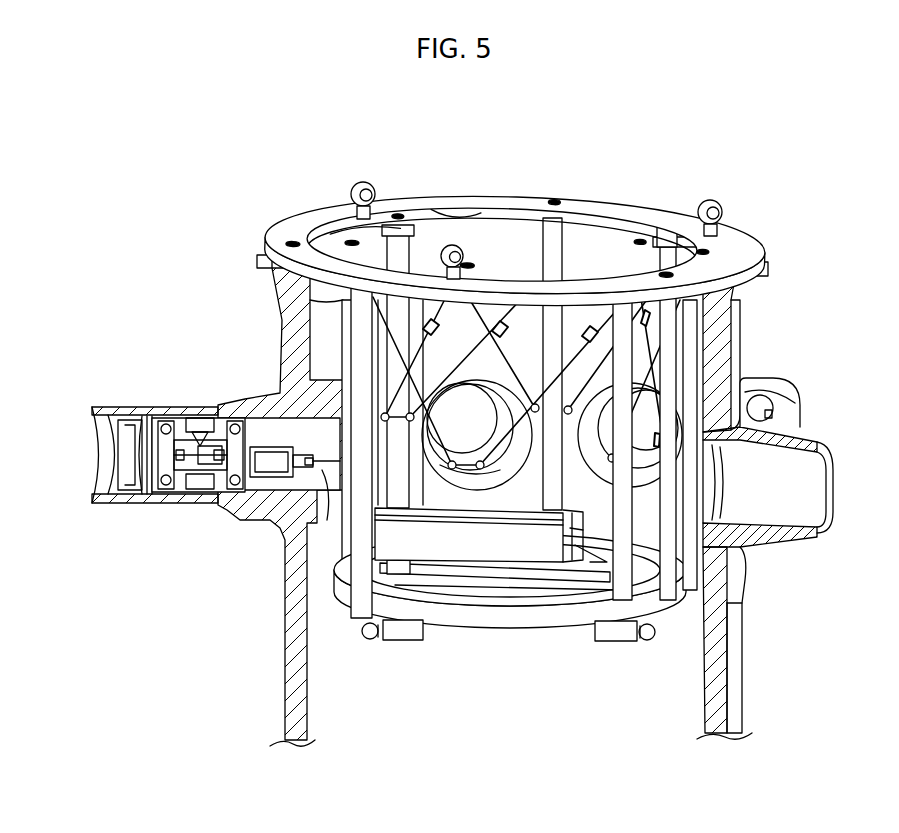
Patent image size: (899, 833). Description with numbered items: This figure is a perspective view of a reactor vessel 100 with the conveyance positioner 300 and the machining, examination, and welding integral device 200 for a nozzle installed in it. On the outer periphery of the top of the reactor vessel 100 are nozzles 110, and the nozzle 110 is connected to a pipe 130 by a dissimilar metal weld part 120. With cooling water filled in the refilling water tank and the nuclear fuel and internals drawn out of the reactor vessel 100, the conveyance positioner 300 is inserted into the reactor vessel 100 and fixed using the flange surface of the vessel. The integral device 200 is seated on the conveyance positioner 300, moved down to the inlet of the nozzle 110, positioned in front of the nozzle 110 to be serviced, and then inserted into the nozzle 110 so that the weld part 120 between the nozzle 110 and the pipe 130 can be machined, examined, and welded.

The reactor vessel 100 is at (285, 627).
The nozzle 110 is at (268, 390).
The dissimilar metal weld part 120 is at (198, 398).
The pipe 130 is at (104, 398).
The machining, examination, and welding integral device for a nozzle 200 is at (148, 456).
The conveyance positioner 300 is at (512, 630).